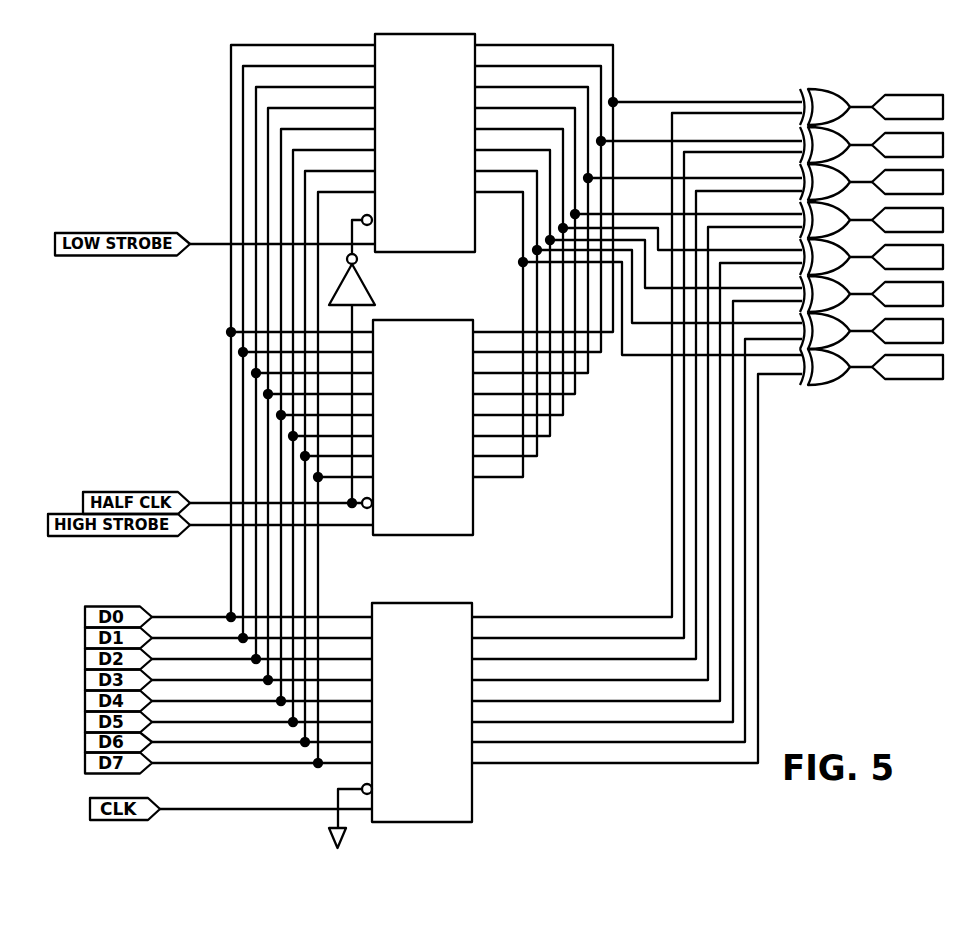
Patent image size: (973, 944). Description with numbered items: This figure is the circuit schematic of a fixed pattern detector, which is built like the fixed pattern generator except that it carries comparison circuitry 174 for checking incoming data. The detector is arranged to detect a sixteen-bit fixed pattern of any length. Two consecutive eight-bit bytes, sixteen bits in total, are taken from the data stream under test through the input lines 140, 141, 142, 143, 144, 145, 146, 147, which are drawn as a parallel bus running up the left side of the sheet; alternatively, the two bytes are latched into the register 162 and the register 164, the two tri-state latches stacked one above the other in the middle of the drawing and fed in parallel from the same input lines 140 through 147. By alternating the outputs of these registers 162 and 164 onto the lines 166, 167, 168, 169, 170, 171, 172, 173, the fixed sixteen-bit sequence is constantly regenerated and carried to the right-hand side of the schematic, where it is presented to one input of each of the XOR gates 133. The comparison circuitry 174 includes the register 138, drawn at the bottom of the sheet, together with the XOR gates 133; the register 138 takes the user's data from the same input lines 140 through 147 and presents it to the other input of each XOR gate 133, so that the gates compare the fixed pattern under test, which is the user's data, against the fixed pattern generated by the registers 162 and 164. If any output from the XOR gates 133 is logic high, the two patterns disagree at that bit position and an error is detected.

The XOR gates 133 is at (822, 110).
The register 138 is at (464, 790).
The input line 140 is at (237, 763).
The input line 141 is at (307, 220).
The input line 142 is at (293, 325).
The input line 143 is at (280, 435).
The input line 144 is at (267, 467).
The input line 145 is at (255, 548).
The input line 146 is at (232, 552).
The input line 147 is at (203, 615).
The register 162 is at (443, 243).
The register 164 is at (450, 523).
The line 166 is at (712, 102).
The line 167 is at (690, 141).
The line 168 is at (696, 178).
The line 169 is at (705, 214).
The line 170 is at (660, 252).
The line 171 is at (668, 252).
The line 172 is at (763, 322).
The line 173 is at (763, 355).
The comparison circuitry 174 is at (793, 568).